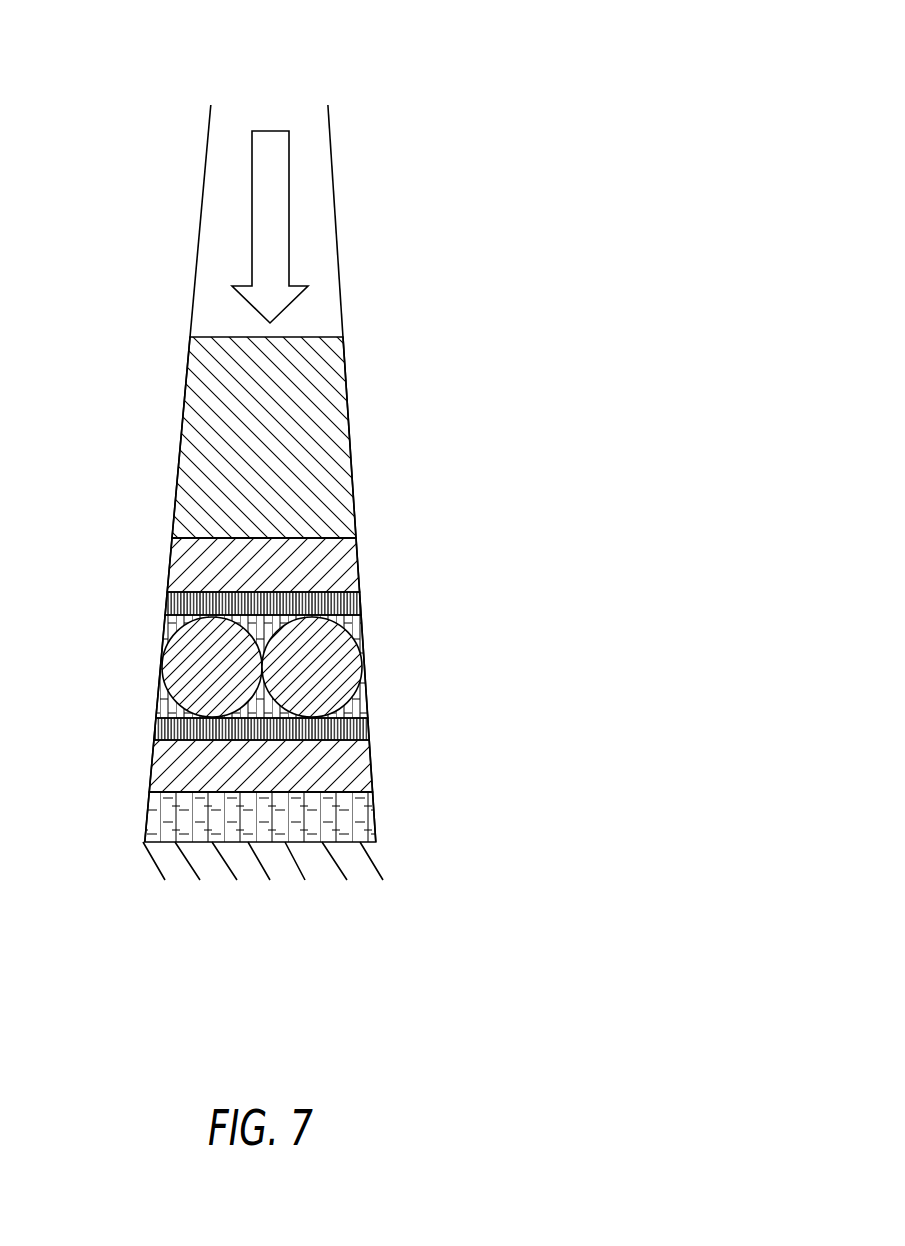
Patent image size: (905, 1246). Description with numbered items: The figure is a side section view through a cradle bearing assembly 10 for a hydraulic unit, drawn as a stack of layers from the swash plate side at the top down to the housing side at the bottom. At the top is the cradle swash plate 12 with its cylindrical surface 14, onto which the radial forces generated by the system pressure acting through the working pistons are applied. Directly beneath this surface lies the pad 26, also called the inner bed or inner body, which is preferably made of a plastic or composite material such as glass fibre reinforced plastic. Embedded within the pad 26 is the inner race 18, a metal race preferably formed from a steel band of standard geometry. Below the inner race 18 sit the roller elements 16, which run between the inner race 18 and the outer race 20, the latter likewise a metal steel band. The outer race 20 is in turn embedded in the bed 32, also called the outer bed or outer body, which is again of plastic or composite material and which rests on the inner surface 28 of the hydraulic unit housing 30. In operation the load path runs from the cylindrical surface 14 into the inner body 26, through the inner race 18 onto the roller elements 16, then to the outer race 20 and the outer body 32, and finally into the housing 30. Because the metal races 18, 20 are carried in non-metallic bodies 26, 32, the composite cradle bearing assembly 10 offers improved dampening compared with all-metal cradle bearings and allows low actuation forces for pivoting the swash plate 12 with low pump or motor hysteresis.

The cradle bearing assembly 10 is at (448, 123).
The cradle swash plate 12 is at (268, 428).
The cylindrical surface 14 is at (290, 535).
The roller elements 16 is at (328, 677).
The inner race 18 is at (352, 602).
The outer race 20 is at (360, 725).
The pad 26 is at (222, 565).
The inner surface 28 is at (257, 795).
The hydraulic unit housing 30 is at (295, 817).
The bed 32 is at (185, 757).